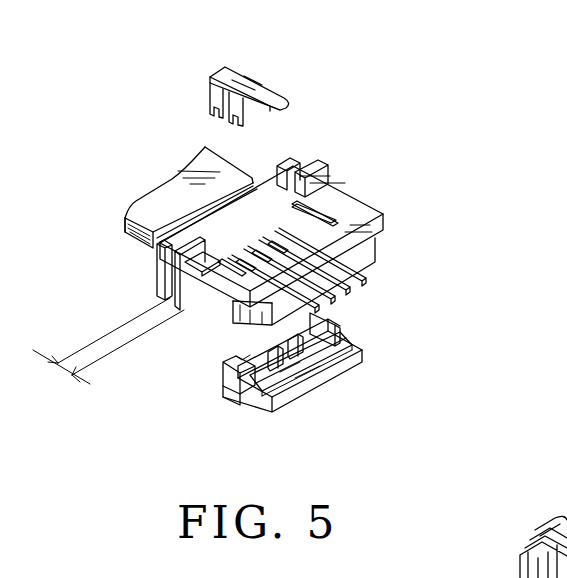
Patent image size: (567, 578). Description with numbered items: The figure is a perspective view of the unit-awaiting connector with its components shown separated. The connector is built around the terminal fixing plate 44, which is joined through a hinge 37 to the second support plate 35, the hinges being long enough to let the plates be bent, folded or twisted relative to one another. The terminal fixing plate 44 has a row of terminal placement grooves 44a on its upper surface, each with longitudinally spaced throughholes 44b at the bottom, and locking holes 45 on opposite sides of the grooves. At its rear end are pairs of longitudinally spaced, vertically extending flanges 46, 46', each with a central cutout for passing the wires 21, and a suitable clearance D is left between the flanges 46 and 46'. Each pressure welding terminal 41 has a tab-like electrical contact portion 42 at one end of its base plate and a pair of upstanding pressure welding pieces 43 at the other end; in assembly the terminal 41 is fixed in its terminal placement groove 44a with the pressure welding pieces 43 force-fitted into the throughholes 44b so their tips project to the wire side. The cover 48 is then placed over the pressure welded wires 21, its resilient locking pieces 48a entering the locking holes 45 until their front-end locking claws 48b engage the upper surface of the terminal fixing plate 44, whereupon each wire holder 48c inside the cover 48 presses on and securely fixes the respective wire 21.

The wire 21 is at (552, 520).
The second support plate 35 is at (127, 232).
The hinge 37 is at (200, 205).
The pressure welding terminal 41 is at (210, 68).
The tab-like electrical contact portion 42 is at (270, 88).
The pressure welding pieces 43 is at (226, 100).
The terminal fixing plate 44 is at (387, 240).
The terminal placement grooves 44a is at (362, 270).
The throughholes 44b is at (270, 178).
The locking holes 45 is at (207, 262).
The flange 46 is at (227, 178).
The flange 46' is at (254, 207).
The cover 48 is at (313, 397).
The resilient locking pieces 48a is at (345, 345).
The locking claws 48b is at (222, 380).
The wire holder 48c is at (345, 378).
The clearance D is at (108, 351).